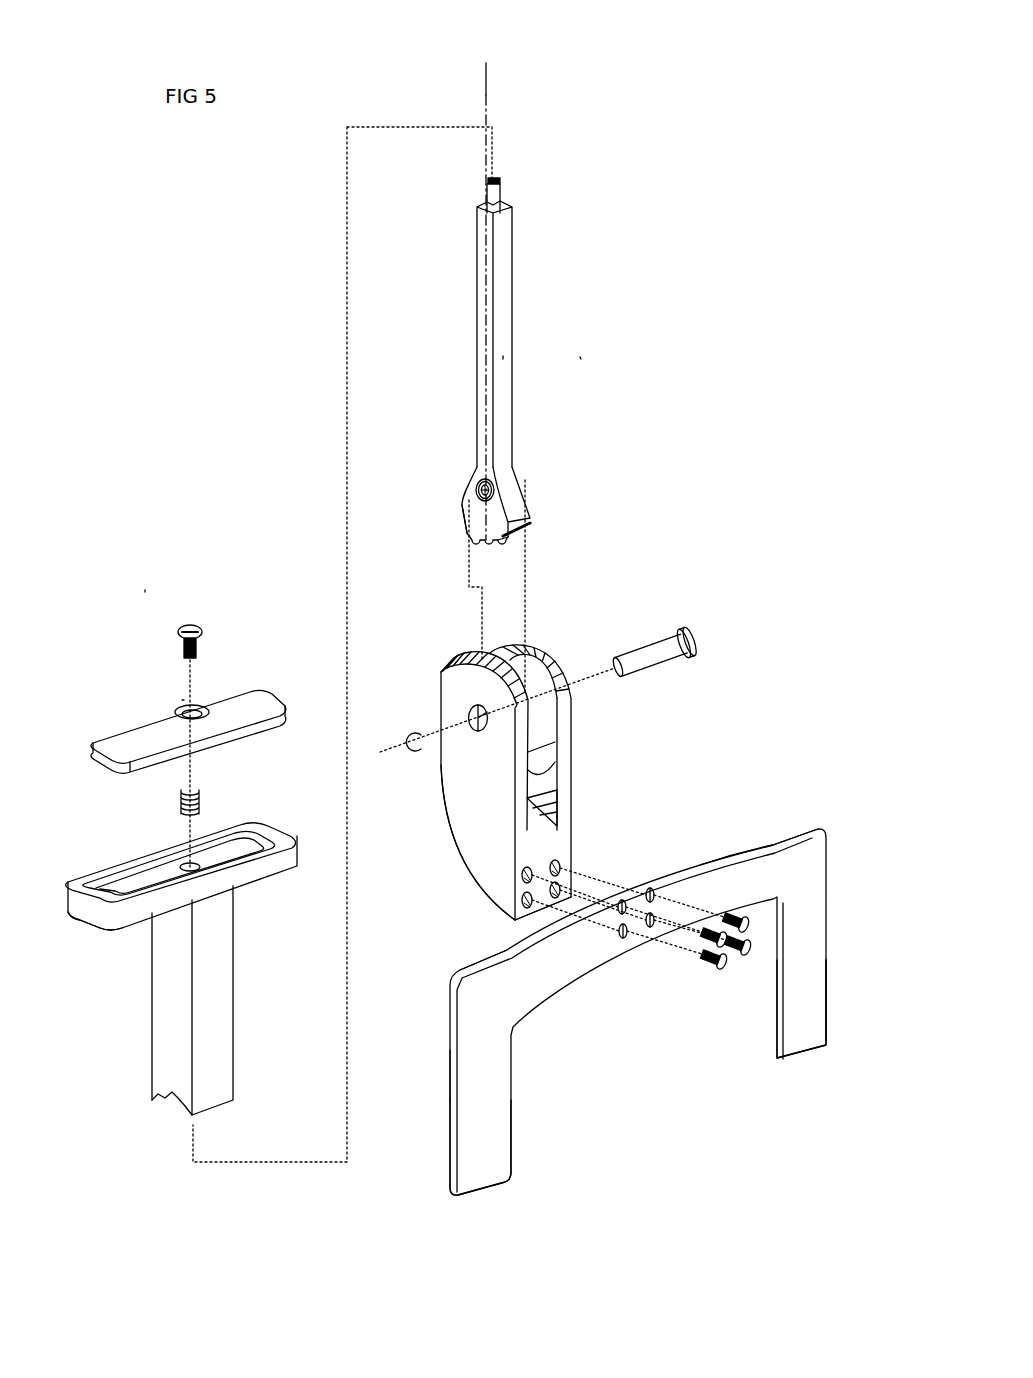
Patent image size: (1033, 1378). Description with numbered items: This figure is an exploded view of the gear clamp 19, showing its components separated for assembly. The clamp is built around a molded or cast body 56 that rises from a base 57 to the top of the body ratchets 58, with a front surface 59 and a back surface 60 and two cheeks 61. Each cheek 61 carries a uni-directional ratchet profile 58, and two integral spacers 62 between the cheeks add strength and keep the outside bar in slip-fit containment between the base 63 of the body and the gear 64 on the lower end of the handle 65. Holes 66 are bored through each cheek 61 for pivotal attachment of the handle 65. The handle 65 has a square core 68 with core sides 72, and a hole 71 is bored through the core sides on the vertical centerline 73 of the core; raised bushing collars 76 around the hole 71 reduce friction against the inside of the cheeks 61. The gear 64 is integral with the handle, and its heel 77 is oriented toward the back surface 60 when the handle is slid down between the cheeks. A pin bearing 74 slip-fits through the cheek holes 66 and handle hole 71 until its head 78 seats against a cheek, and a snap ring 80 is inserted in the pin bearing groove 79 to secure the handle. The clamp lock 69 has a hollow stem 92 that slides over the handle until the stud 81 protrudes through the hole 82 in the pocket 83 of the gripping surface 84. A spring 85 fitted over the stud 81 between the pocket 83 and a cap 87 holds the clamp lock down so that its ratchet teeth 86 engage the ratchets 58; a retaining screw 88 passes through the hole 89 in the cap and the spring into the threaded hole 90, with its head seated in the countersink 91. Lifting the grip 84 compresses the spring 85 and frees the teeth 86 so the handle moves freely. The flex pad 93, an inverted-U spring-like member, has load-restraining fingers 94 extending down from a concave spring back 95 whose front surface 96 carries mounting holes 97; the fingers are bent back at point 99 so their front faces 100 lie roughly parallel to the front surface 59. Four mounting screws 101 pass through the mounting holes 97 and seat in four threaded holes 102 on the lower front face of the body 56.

The gear clamp 19 is at (292, 432).
The body 56 is at (493, 750).
The base 57 is at (508, 917).
The ratchets 58 is at (480, 660).
The front surface 59 is at (550, 835).
The back surface 60 is at (440, 705).
The cheeks 61 is at (470, 683).
The spacers 62 is at (548, 755).
The base 63 is at (540, 813).
The gear 64 is at (503, 543).
The handle 65 is at (580, 358).
The holes 66 is at (477, 733).
The core 68 is at (503, 357).
The clamp lock 69 is at (145, 592).
The hole 71 is at (478, 492).
The core sides 72 is at (480, 290).
The vertical centerline 73 is at (492, 92).
The pin bearing 74 is at (691, 643).
The bushing collars 76 is at (490, 488).
The heel 77 is at (467, 524).
The head 78 is at (697, 652).
The pin bearing groove 79 is at (627, 677).
The snap ring 80 is at (417, 753).
The stud 81 is at (500, 197).
The hole 82 is at (187, 863).
The pocket 83 is at (183, 885).
The gripping surface 84 is at (118, 915).
The spring 85 is at (180, 802).
The ratchet teeth 86 is at (172, 1100).
The cap 87 is at (178, 696).
The retaining screw 88 is at (197, 645).
The hole 89 is at (193, 712).
The threaded hole 90 is at (495, 177).
The countersink 91 is at (185, 700).
The stem 92 is at (158, 1029).
The flex pad 93 is at (601, 997).
The fingers 94 is at (492, 1187).
The spring back 95 is at (727, 880).
The front surface 96 is at (636, 917).
The mounting holes 97 is at (653, 890).
The point 99 is at (510, 993).
The front faces 100 is at (452, 1100).
The mounting screws 101 is at (697, 953).
The threaded holes 102 is at (522, 877).